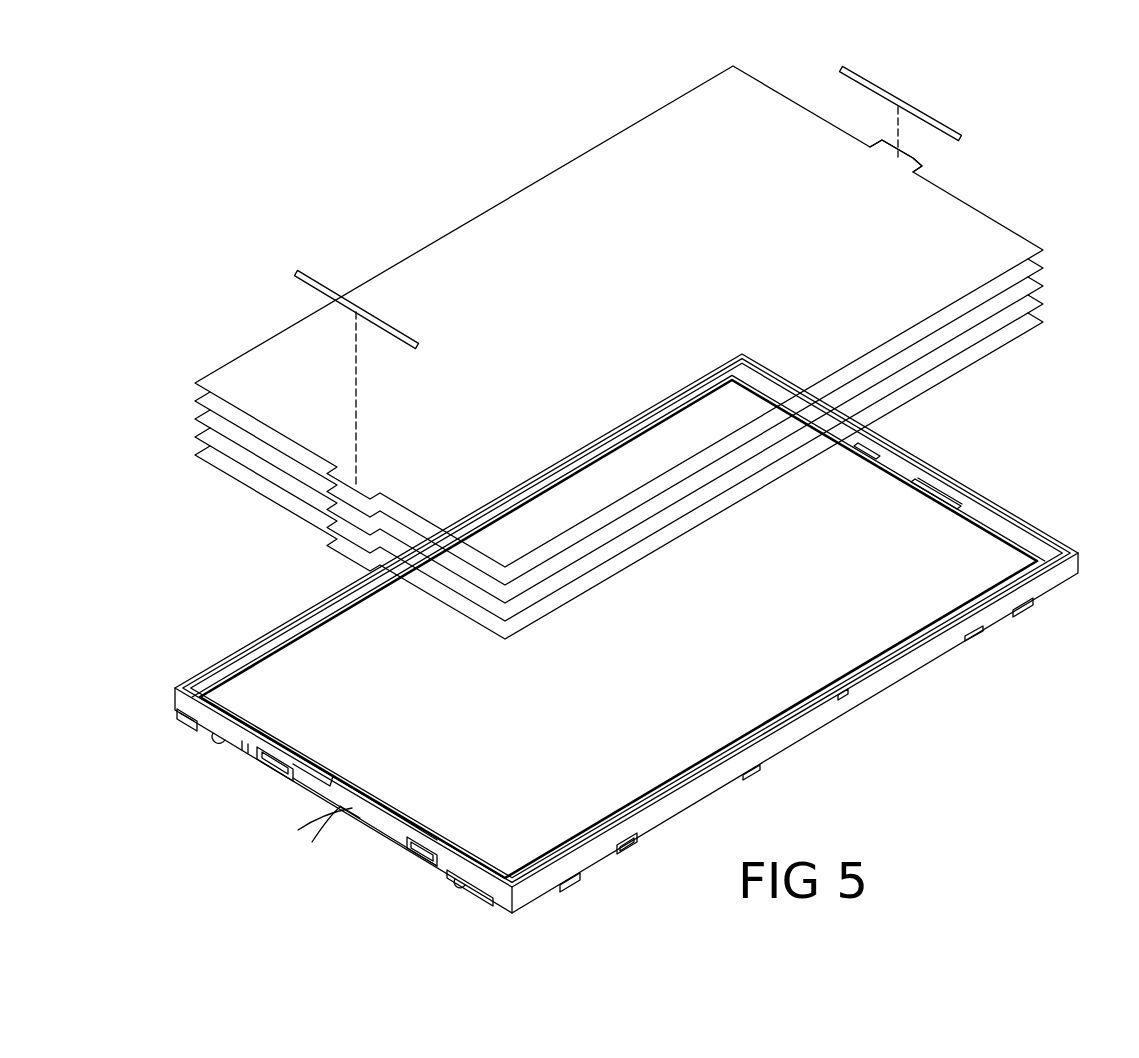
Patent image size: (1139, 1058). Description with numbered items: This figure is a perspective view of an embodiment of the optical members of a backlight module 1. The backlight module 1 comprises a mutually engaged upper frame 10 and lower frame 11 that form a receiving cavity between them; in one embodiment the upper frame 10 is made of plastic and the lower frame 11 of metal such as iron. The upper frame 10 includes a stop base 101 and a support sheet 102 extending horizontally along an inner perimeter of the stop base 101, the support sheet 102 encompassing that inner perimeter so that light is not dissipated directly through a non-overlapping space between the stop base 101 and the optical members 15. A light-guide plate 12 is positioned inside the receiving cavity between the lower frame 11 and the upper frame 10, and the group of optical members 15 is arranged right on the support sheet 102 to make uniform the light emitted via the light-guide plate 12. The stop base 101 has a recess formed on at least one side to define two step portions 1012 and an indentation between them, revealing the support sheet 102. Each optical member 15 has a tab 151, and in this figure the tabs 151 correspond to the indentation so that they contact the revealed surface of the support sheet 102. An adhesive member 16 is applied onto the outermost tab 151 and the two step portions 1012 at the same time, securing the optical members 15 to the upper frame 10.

The backlight module 1 is at (868, 743).
The upper frame 10 is at (1065, 542).
The stop base 101 is at (1010, 525).
The step portions 1012 is at (870, 447).
The support sheet 102 is at (887, 468).
The lower frame 11 is at (923, 668).
The light-guide plate 12 is at (270, 687).
The optical members 15 is at (987, 227).
The tab 151 is at (913, 160).
The adhesive member 16 is at (320, 283).